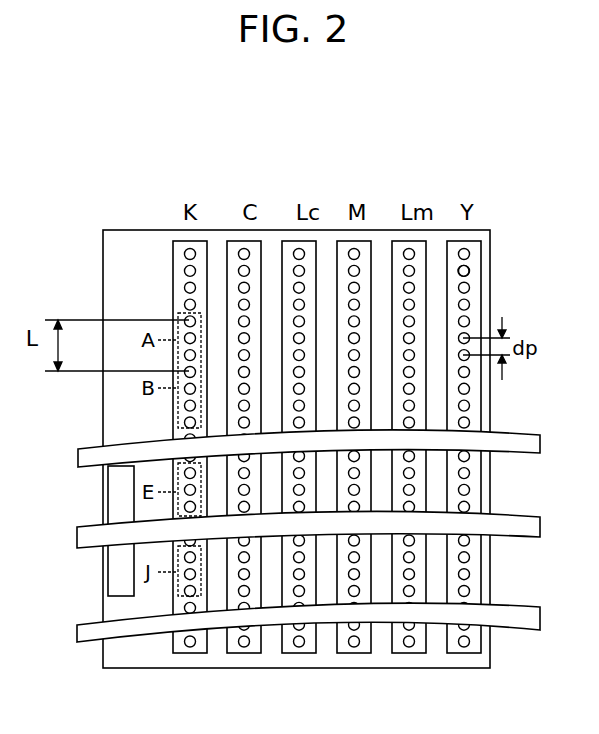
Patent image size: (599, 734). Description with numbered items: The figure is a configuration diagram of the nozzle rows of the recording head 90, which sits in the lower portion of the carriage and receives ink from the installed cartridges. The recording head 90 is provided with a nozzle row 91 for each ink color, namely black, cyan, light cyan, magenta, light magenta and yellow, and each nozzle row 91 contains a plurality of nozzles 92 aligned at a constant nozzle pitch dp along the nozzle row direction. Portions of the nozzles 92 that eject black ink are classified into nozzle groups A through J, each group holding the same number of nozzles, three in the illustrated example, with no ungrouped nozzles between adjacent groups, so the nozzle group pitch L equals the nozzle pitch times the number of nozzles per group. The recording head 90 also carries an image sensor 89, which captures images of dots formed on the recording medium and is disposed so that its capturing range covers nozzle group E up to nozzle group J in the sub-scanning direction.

The image sensor 89 is at (108, 517).
The recording head 90 is at (486, 226).
The nozzle row 91 is at (482, 307).
The nozzle 92 is at (467, 272).